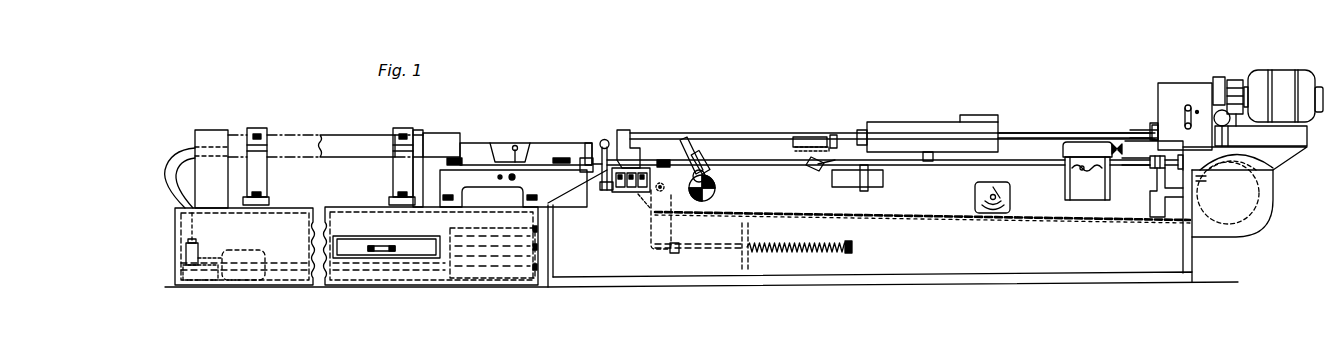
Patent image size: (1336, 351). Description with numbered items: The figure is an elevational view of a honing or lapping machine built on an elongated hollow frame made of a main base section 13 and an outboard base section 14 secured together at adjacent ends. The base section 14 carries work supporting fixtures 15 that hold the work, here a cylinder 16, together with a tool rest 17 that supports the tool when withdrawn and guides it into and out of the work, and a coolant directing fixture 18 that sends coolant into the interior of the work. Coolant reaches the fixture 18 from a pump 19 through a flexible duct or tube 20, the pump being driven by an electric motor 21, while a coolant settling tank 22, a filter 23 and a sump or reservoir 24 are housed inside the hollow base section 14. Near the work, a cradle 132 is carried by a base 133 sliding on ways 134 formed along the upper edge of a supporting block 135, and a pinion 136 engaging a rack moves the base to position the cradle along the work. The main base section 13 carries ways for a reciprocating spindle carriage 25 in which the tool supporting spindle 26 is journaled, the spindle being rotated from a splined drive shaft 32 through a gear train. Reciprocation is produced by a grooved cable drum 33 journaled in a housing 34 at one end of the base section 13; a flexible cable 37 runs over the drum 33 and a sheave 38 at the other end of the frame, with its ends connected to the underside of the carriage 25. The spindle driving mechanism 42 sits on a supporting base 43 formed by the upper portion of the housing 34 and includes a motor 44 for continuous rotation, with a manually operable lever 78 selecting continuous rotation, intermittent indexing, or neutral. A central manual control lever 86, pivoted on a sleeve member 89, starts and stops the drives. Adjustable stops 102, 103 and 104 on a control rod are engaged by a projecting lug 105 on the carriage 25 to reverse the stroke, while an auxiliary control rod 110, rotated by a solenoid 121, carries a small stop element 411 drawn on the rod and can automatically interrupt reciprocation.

The main base section 13 is at (908, 262).
The outboard base section 14 is at (337, 276).
The work supporting fixtures 15 is at (267, 128).
The cylinder 16 is at (344, 133).
The tool rest 17 is at (507, 166).
The coolant directing fixture 18 is at (213, 130).
The pump 19 is at (197, 253).
The duct or tube 20 is at (181, 172).
The electric motor 21 is at (250, 250).
The coolant settling tank 22 is at (498, 258).
The filter 23 is at (387, 238).
The sump or reservoir 24 is at (410, 278).
The spindle carriage 25 is at (917, 125).
The tool supporting spindle 26 is at (805, 137).
The splined drive shaft 32 is at (770, 134).
The cable drum 33 is at (1262, 212).
The drum housing 34 is at (1242, 232).
The flexible cable 37 is at (1050, 219).
The sheave 38 is at (645, 200).
The spindle driving mechanism 42 is at (1234, 73).
The supporting base 43 is at (1290, 148).
The motor 44 is at (1288, 78).
The manually operable lever 78 is at (1181, 113).
The manual control lever 86 is at (684, 140).
The sleeve member 89 is at (714, 185).
The adjustable stop 102 is at (705, 165).
The adjustable stop 103 is at (927, 174).
The adjustable stop 104 is at (836, 165).
The projecting lug 105 is at (926, 151).
The auxiliary control rod 110 is at (767, 166).
The solenoid 121 is at (1153, 212).
The cradle 132 is at (450, 148).
The base 133 is at (538, 170).
The ways 134 is at (448, 166).
The supporting block 135 is at (466, 200).
The pinion 136 is at (494, 167).
The valve plate 411 is at (812, 170).